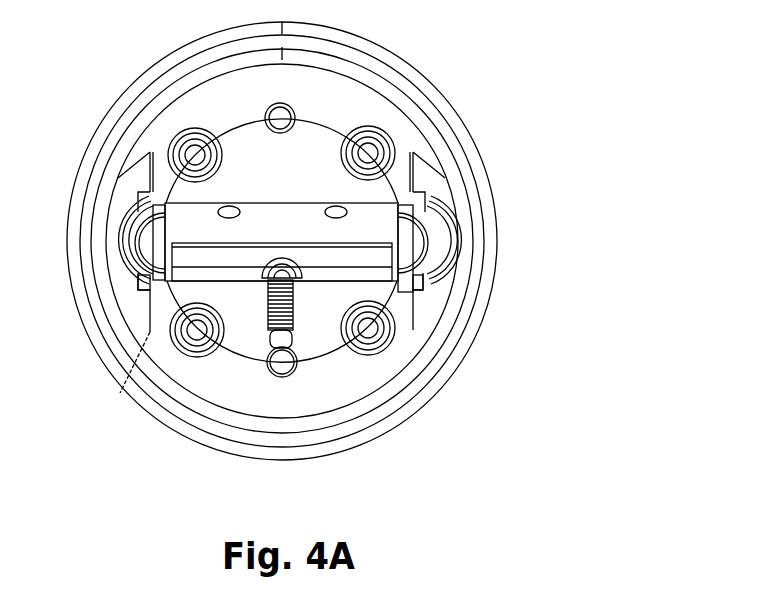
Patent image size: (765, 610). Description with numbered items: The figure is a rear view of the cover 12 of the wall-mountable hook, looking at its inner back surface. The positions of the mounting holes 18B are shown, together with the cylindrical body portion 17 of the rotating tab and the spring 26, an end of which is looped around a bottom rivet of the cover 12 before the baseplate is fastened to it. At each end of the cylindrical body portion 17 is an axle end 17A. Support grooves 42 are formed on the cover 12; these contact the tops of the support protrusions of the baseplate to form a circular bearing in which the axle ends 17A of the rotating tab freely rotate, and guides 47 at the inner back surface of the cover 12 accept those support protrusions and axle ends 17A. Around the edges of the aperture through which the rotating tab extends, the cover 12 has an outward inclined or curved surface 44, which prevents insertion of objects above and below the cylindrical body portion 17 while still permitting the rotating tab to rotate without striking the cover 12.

The cover 12 is at (522, 51).
The cylindrical body portion 17 is at (207, 240).
The axle ends 17A is at (400, 268).
The mounting holes 18B is at (368, 330).
The spring 26 is at (294, 291).
The support grooves 42 is at (165, 281).
The outward inclined/curved surface 44 is at (142, 276).
The guides 47 is at (417, 290).